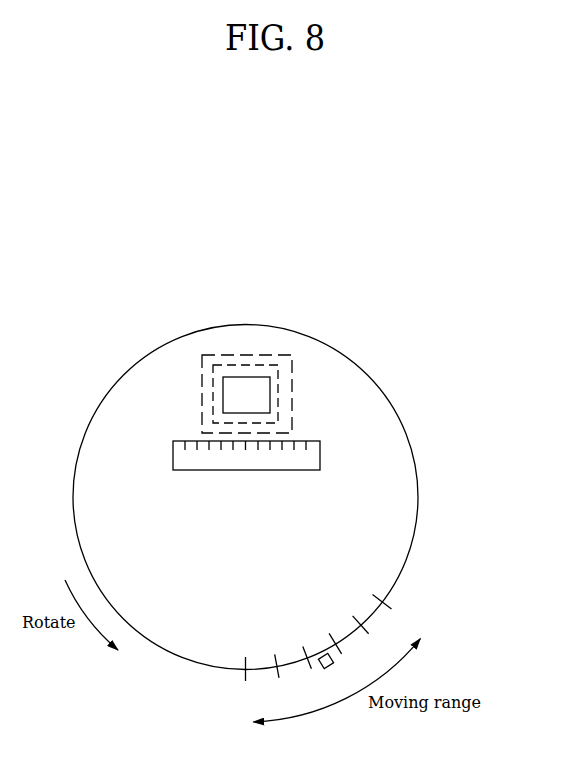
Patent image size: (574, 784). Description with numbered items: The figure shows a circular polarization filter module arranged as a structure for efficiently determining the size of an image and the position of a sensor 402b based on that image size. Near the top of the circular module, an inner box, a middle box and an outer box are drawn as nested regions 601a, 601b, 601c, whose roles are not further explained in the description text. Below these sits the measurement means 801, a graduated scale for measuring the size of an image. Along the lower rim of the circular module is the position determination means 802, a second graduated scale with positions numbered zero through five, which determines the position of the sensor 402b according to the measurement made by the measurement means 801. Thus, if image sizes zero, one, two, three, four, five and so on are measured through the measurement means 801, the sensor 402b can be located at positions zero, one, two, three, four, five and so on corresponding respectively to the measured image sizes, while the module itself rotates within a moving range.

The inner region indicator 601a is at (241, 377).
The middle region indicator 601b is at (247, 364).
The outer region indicator 601c is at (270, 350).
The measurement means 801 is at (320, 455).
The position determination means 802 is at (381, 597).
The sensor 402b is at (330, 668).